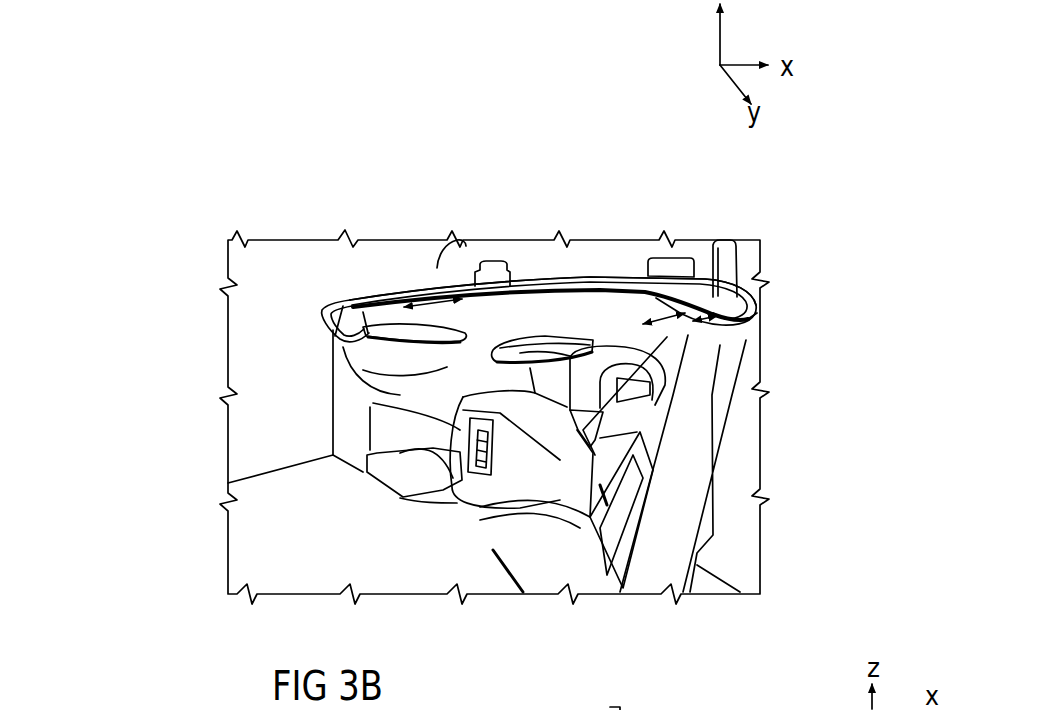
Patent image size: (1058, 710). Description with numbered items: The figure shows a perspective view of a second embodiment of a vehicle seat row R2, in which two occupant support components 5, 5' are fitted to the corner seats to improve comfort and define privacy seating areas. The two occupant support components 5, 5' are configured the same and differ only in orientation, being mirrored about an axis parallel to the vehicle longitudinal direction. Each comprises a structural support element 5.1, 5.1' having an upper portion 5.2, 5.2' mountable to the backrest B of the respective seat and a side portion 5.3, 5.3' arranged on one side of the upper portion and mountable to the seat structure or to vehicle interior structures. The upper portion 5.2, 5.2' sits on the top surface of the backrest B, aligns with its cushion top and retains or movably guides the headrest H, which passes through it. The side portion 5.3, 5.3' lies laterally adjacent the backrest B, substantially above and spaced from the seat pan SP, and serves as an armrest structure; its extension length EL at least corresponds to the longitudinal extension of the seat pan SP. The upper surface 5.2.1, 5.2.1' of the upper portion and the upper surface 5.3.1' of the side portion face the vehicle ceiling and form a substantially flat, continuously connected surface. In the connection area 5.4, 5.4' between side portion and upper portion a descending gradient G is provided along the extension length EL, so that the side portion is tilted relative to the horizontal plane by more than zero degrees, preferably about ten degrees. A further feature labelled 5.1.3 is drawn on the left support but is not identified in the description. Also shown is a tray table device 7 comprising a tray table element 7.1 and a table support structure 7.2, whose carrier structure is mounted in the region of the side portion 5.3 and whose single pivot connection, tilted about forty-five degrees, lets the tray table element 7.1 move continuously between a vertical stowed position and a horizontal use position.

The occupant support component 5 is at (541, 202).
The structural support element 5.1 is at (478, 223).
The upper portion 5.2 is at (553, 194).
The side portion 5.3 is at (293, 222).
The connection area 5.4 is at (532, 199).
The loop web 5.1.3 is at (365, 300).
The upper surface of the upper portion 5.2.1 is at (587, 209).
The occupant support component 5' is at (752, 439).
The structural support element 5.1' is at (752, 392).
The upper portion 5.2' is at (795, 277).
The upper surface of the upper portion 5.2.1' is at (719, 316).
The side portion 5.3' is at (767, 469).
The upper surface of the side portion 5.3.1' is at (607, 473).
The connection area 5.4' is at (841, 331).
The tray table device 7 is at (337, 367).
The tray table element 7.1 is at (350, 298).
The table support structure 7.2 is at (345, 353).
The backrest B is at (463, 367).
The seat pan SP is at (395, 400).
The headrest H is at (507, 260).
The extension length EL is at (560, 318).
The descending gradient G is at (470, 300).
The vehicle seat row R2 is at (805, 177).